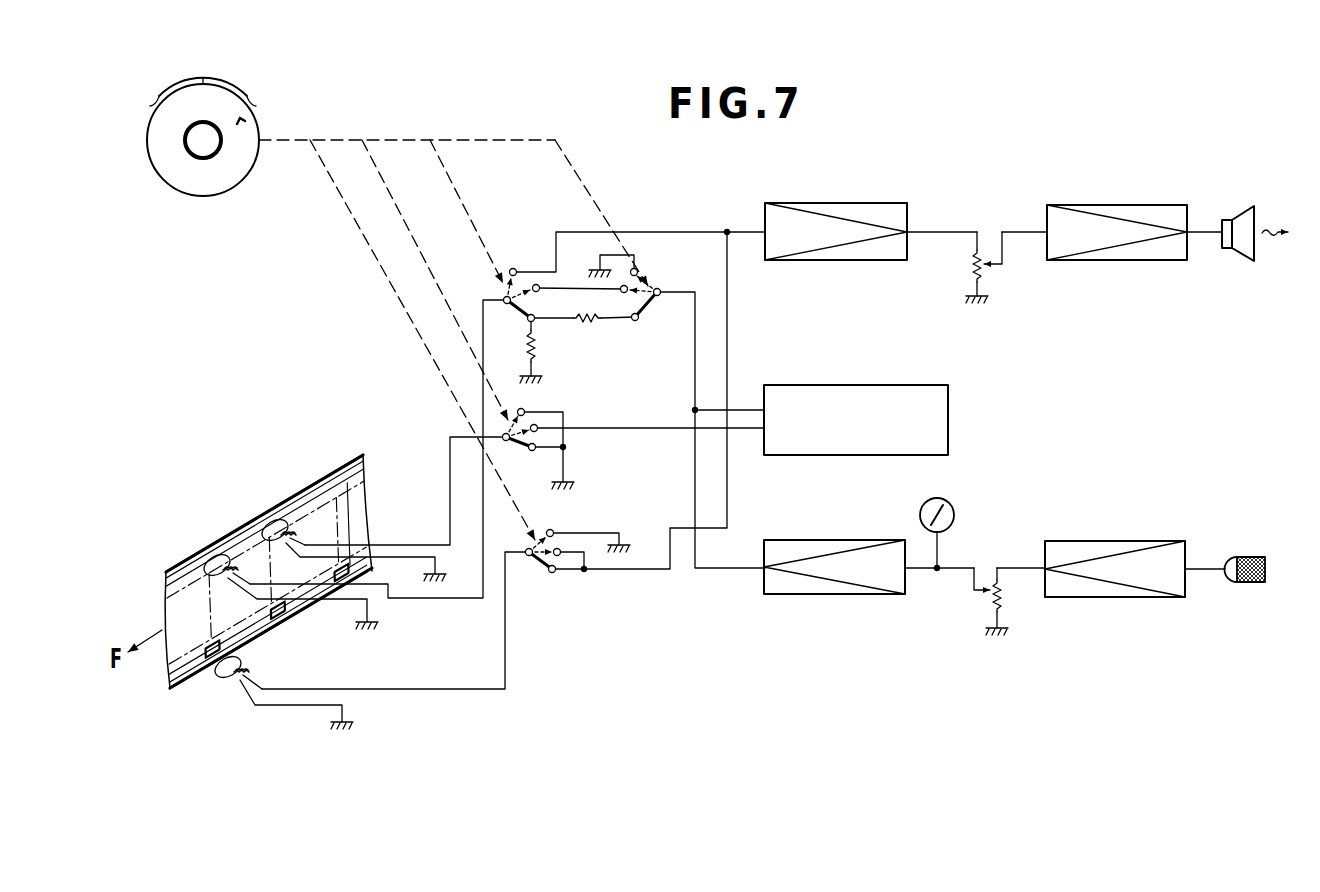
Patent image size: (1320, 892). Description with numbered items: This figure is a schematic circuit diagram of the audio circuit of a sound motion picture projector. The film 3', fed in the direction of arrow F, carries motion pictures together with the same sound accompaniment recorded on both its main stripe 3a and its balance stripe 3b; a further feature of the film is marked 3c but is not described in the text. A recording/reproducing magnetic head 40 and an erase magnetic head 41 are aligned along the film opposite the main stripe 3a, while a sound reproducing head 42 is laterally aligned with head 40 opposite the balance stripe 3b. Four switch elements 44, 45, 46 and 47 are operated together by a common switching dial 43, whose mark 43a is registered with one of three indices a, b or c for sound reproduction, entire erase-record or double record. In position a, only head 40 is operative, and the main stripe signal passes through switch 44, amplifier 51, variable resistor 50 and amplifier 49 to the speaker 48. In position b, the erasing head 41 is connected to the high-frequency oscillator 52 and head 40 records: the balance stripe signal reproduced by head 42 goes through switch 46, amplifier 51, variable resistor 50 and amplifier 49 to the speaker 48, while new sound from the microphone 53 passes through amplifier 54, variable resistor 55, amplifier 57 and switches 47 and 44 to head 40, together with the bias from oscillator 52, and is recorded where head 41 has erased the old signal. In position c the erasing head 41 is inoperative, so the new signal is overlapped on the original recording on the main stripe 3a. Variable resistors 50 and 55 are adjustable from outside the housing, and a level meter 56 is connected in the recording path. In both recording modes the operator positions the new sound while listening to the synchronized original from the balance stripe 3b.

The film 3' is at (283, 571).
The main stripe 3a is at (185, 565).
The balance stripe 3b is at (178, 690).
The perforation 3c is at (278, 620).
The recording/reproducing magnetic head 40 is at (222, 555).
The erase magnetic head 41 is at (283, 522).
The sound reproducing head 42 is at (222, 680).
The switching dial 43 is at (207, 190).
The mark 43a is at (254, 150).
The switch element 44 is at (509, 312).
The switch element 45 is at (510, 450).
The switch element 46 is at (530, 565).
The switch element 47 is at (652, 310).
The speaker 48 is at (1243, 216).
The amplifier 49 is at (1162, 210).
The variable resistor 50 is at (1000, 270).
The amplifier 51 is at (886, 208).
The high-frequency oscillator 52 is at (855, 383).
The microphone 53 is at (1250, 556).
The amplifier 54 is at (1110, 541).
The variable resistor 55 is at (1006, 597).
The level meter 56 is at (955, 514).
The amplifier 57 is at (820, 596).